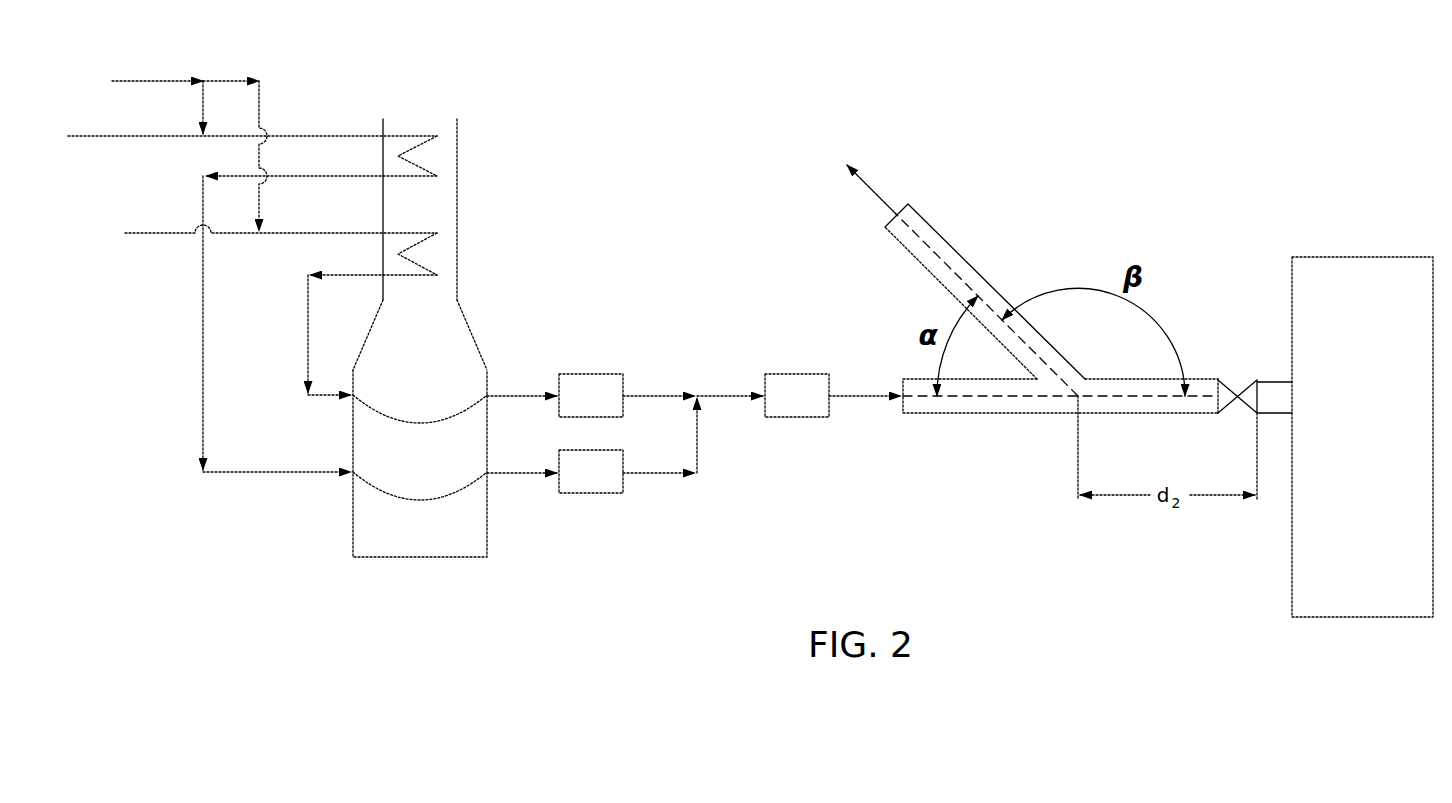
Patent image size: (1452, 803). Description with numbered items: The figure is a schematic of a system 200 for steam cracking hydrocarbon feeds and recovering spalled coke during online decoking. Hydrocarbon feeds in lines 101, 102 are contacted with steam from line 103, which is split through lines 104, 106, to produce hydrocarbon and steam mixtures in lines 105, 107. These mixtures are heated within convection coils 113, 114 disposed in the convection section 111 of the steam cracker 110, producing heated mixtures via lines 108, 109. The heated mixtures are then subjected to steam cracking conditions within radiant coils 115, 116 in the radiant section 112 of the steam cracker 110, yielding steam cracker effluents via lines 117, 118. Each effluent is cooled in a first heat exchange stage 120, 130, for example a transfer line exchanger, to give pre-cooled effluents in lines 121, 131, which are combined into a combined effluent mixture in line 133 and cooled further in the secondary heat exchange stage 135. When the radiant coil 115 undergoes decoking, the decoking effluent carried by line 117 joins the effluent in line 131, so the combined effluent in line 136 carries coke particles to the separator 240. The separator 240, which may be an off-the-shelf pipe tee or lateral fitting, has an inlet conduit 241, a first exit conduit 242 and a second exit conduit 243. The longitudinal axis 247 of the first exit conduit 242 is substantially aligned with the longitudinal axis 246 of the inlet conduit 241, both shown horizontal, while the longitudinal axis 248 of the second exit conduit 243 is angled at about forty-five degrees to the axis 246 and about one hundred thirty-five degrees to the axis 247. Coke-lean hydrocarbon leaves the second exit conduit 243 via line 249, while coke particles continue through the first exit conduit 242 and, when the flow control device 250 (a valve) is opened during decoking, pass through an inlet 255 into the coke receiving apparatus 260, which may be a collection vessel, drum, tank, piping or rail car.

The hydrocarbon feed line 101 is at (85, 134).
The hydrocarbon feed line 102 is at (157, 231).
The steam line 103 is at (130, 79).
The steam line 104 is at (201, 110).
The hydrocarbon and steam mixture line 105 is at (350, 134).
The steam line 106 is at (262, 108).
The hydrocarbon and steam mixture line 107 is at (335, 231).
The heated mixture line 108 is at (201, 356).
The heated mixture line 109 is at (306, 326).
The steam cracker 110 is at (470, 325).
The convection section 111 is at (487, 174).
The radiant section 112 is at (338, 504).
The convection coil 113 is at (419, 134).
The convection coil 114 is at (419, 231).
The radiant coil 115 is at (418, 503).
The radiant coil 116 is at (420, 420).
The steam cracker effluent line 117 is at (524, 470).
The steam cracker effluent line 118 is at (515, 393).
The first heat exchange stage 120 is at (577, 485).
The pre-cooled steam cracker effluent line 121 is at (661, 470).
The first heat exchange stage 130 is at (577, 408).
The pre-cooled steam cracker effluent line 131 is at (655, 393).
The combined effluent mixture line 133 is at (724, 393).
The secondary heat exchange stage 135 is at (783, 408).
The combined effluent line 136 is at (861, 393).
The system 200 is at (770, 113).
The separator 240 is at (954, 468).
The inlet conduit 241 is at (928, 414).
The first exit conduit 242 is at (1203, 378).
The second exit conduit 243 is at (963, 262).
The longitudinal axis of inlet conduit 246 is at (995, 414).
The longitudinal axis of first exit conduit 247 is at (1138, 415).
The longitudinal axis of second exit conduit 248 is at (921, 236).
The coke-lean hydrocarbon line 249 is at (877, 196).
The flow control device 250 is at (1227, 410).
The inlet 255 is at (1281, 378).
The coke receiving apparatus 260 is at (1347, 467).